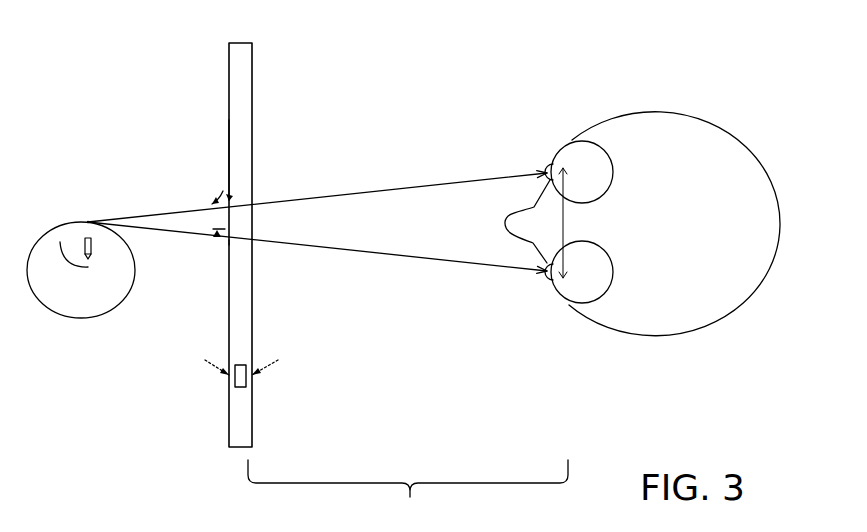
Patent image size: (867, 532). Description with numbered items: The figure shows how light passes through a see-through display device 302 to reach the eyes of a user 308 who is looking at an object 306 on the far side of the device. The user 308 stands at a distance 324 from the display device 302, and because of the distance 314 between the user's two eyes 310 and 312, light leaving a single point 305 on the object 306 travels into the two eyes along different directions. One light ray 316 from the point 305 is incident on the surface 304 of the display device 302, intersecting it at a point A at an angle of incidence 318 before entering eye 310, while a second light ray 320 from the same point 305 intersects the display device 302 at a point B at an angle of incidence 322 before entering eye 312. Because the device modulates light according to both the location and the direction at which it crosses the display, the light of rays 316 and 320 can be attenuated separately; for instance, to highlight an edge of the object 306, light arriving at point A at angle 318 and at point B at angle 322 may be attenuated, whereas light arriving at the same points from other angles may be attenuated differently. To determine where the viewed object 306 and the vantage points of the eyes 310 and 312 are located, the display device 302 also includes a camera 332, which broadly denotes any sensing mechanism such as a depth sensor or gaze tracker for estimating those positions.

The see-through display device 302 is at (237, 43).
The surface 304 is at (229, 157).
The point 305 is at (88, 222).
The object 306 is at (82, 318).
The user 308 is at (758, 158).
The eye 310 is at (617, 172).
The eye 312 is at (550, 292).
The distance between the user's eyes 314 is at (563, 215).
The light ray 316 is at (397, 187).
The angle of incidence 318 is at (223, 191).
The light ray 320 is at (375, 255).
The angle of incidence 322 is at (217, 232).
The distance 324 is at (408, 490).
The camera 332 is at (240, 387).
The point A is at (229, 201).
The point B is at (229, 240).